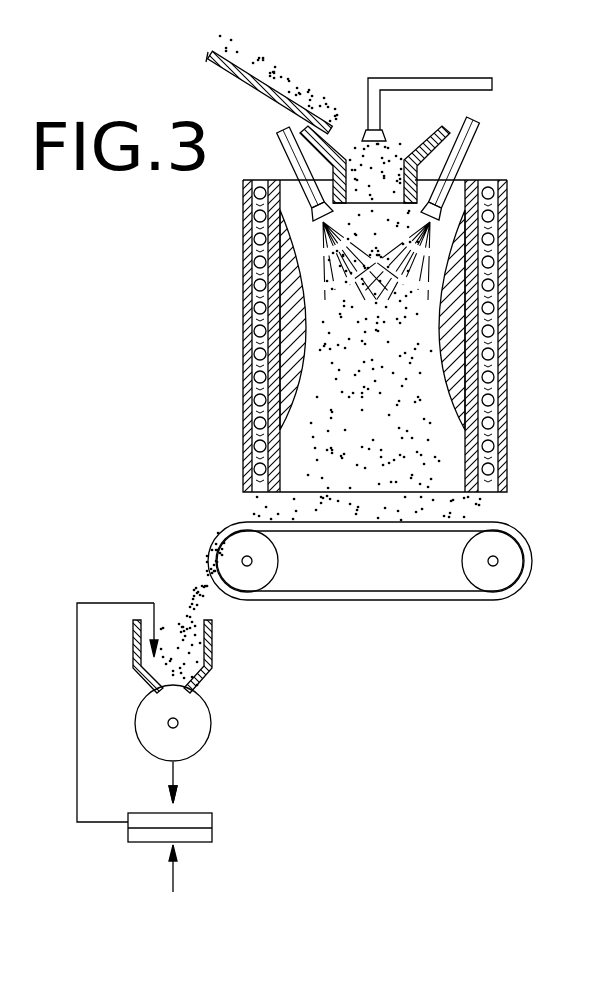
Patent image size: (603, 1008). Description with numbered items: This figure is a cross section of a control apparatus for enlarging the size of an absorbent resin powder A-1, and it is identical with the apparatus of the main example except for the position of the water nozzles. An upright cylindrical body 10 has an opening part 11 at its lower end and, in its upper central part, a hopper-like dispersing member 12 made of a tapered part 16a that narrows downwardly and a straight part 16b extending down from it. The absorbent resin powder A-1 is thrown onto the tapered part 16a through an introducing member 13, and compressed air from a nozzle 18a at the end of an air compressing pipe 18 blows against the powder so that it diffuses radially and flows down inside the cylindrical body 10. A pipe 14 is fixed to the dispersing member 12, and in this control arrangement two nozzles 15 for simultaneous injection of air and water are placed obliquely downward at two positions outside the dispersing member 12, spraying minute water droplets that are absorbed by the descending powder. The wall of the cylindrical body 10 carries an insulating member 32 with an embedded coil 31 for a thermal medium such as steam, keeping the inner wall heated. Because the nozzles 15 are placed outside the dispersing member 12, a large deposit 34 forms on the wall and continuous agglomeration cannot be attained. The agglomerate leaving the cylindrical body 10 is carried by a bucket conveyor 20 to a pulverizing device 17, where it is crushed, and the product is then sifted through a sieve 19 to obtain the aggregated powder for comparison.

The cylindrical body 10 is at (485, 355).
The opening part 11 is at (440, 474).
The hopper-like dispersing member 12 is at (303, 152).
The introducing member 13 is at (248, 88).
The pipe 14 is at (477, 130).
The nozzle 15 is at (440, 207).
The tapered part 16a is at (460, 160).
The straight part 16b is at (330, 193).
The pulverizing device 17 is at (212, 650).
The air compressing pipe 18 is at (448, 78).
The nozzle 18a is at (383, 134).
The sieve 19 is at (212, 824).
The bucket conveyor 20 is at (372, 600).
The coil 31 is at (505, 412).
The insulating member 32 is at (500, 303).
The deposit 34 is at (292, 345).
The absorbent resin powder A-1 is at (271, 83).